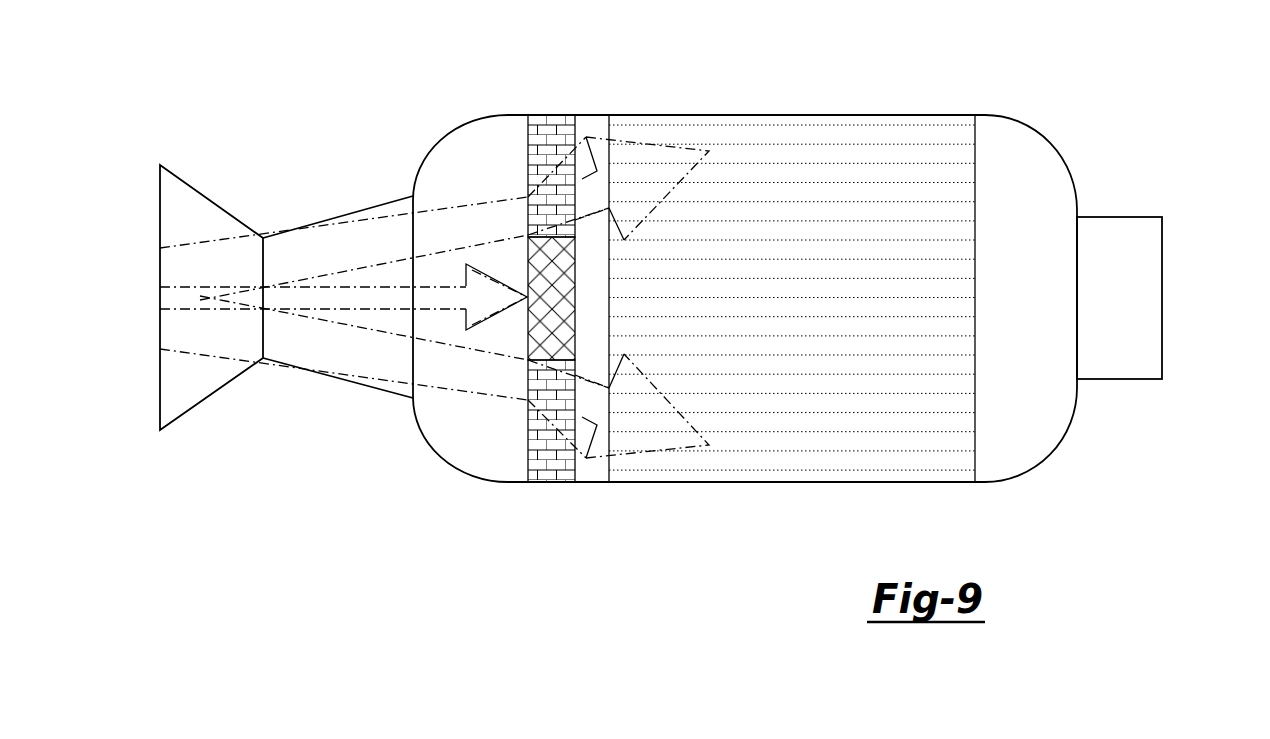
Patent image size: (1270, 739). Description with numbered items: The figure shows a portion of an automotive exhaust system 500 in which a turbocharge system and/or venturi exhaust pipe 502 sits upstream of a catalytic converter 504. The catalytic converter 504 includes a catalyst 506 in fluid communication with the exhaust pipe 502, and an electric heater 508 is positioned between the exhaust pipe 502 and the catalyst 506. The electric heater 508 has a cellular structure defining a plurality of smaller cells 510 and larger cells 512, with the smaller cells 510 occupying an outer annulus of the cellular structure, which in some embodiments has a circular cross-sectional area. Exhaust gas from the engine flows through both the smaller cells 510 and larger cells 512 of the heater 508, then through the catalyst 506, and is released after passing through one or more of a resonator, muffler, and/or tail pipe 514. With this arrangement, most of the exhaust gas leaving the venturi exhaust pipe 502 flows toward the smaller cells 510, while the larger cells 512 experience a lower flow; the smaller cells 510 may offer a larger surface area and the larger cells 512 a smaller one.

The automotive exhaust system 500 is at (1100, 73).
The venturi exhaust pipe 502 is at (212, 394).
The catalytic converter 504 is at (793, 112).
The catalyst 506 is at (887, 155).
The electric heater 508 is at (577, 293).
The smaller cells 510 is at (553, 143).
The larger cells 512 is at (557, 268).
The resonator, muffler, and/or tail pipe 514 is at (1137, 255).